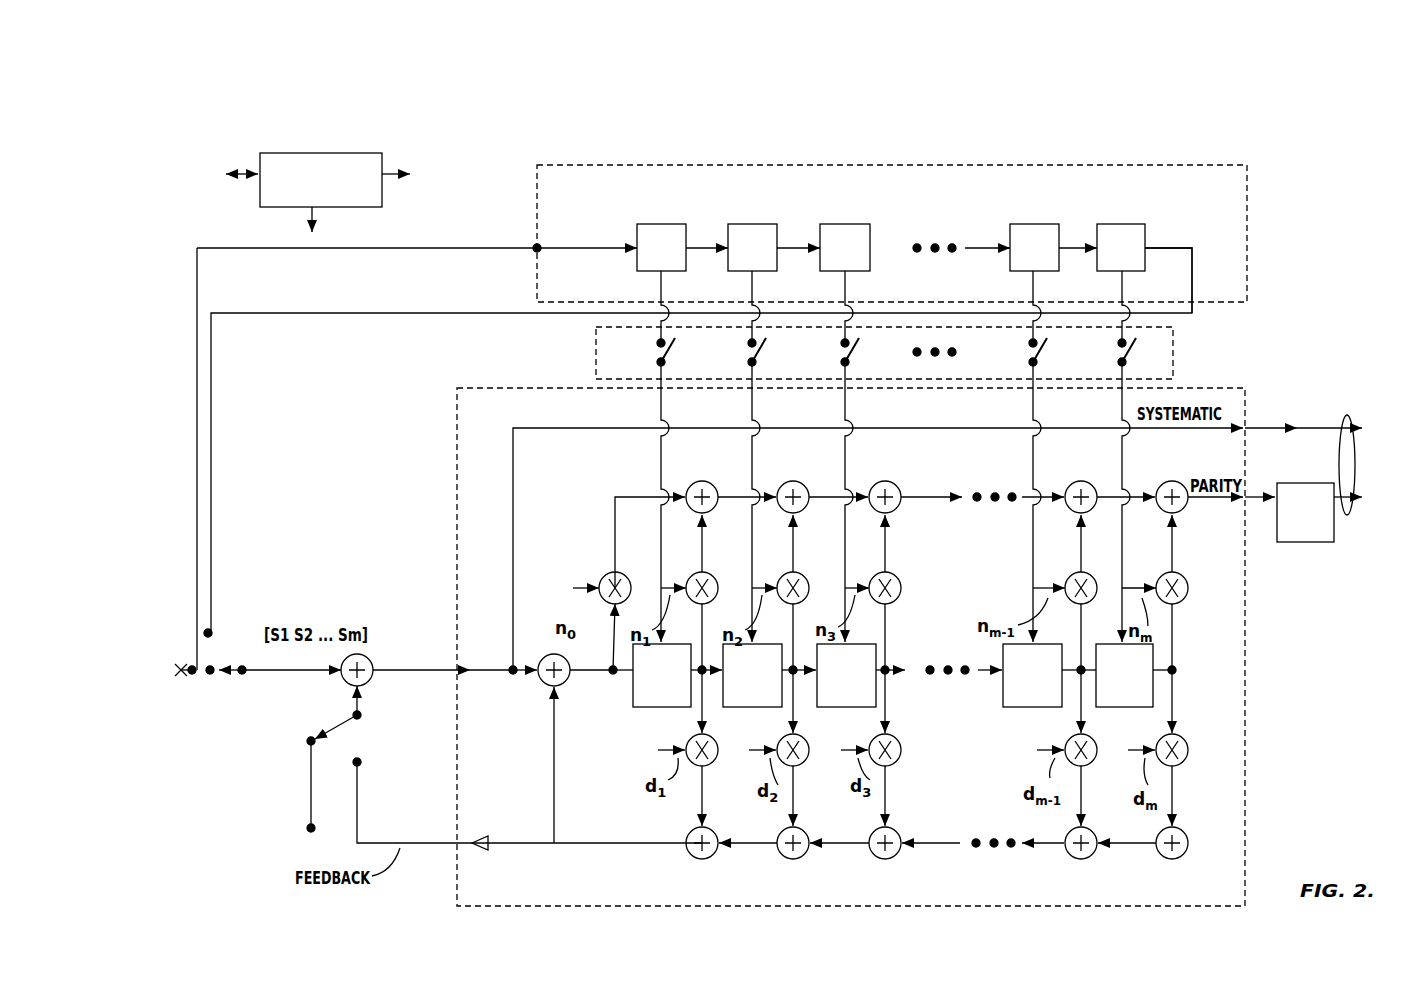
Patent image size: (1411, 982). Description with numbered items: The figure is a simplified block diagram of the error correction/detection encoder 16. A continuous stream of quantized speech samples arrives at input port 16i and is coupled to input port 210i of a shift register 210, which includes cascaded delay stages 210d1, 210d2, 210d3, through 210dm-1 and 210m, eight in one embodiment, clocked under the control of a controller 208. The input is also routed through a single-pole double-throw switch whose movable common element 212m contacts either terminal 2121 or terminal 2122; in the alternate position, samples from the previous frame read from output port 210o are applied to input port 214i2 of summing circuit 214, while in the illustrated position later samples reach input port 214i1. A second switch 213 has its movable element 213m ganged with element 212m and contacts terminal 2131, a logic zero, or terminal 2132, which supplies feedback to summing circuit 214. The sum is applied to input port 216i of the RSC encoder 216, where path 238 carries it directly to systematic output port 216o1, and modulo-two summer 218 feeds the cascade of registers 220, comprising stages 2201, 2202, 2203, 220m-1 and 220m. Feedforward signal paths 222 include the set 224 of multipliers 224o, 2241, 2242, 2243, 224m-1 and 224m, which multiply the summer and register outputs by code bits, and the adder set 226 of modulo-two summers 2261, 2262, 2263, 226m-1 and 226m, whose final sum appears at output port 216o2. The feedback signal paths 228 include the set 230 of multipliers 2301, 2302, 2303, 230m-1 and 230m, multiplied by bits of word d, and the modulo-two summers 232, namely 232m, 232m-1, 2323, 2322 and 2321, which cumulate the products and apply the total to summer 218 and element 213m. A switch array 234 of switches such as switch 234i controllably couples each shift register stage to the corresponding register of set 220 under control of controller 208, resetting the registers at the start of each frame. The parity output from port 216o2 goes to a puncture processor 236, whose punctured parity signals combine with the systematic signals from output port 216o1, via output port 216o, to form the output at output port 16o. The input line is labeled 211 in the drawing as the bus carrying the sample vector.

The controller 208 is at (378, 150).
The error correction/detection encoder 16 is at (514, 135).
The shift register 210 is at (655, 165).
The input port of shift register 210i is at (537, 245).
The shift register stage 210d1 is at (675, 224).
The shift register stage 210d2 is at (755, 224).
The shift register stage 210d3 is at (848, 224).
The shift register stage 210dm-1 is at (1015, 224).
The delay stage 210m is at (1128, 224).
The output port of shift register 210o is at (1193, 311).
The switch array 234 is at (596, 330).
The switch of switch array 234i is at (657, 346).
The RSC encoder 216 is at (851, 647).
The input port of RSC encoder 216i is at (472, 667).
The output port of RSC encoder 216o is at (466, 848).
The systematic output port 216o1 is at (1248, 426).
The parity output port 216o2 is at (1248, 495).
The input port 16i is at (193, 674).
The output port 16o is at (1342, 416).
The switch terminal 2121 is at (192, 668).
The switch terminal 2122 is at (209, 630).
The movable common element 212m is at (222, 668).
The input bus 211 is at (226, 690).
The summing circuit 214 is at (372, 663).
The input port of summing circuit 214i1 is at (340, 678).
The input port of summing circuit 214i2 is at (352, 690).
The second switch 213 is at (362, 772).
The movable element 213m is at (336, 728).
The switch terminal 2131 is at (308, 745).
The switch terminal 2132 is at (362, 762).
The modulo-two summer 218 is at (547, 688).
The feedback signal paths 228 is at (538, 782).
The cascade of registers 220 is at (618, 714).
The register 2201 is at (666, 708).
The register 2202 is at (760, 708).
The register 2203 is at (855, 708).
The register 220m-1 is at (1040, 708).
The register 220m is at (1143, 708).
The feedforward signal paths 222 is at (602, 508).
The set of multipliers 224 is at (597, 572).
The multiplier 224o is at (624, 575).
The multiplier 2241 is at (727, 568).
The multiplier 2242 is at (820, 568).
The multiplier 2243 is at (901, 580).
The multiplier 224m-1 is at (1070, 580).
The multiplier 224m is at (1205, 567).
The adder set 226 is at (776, 478).
The modulo-two summer 2261 is at (712, 510).
The modulo-two summer 2262 is at (803, 510).
The modulo-two summer 2263 is at (898, 510).
The modulo-two summer 226m-1 is at (1066, 505).
The modulo-two summer 226m is at (1168, 482).
The set of multipliers 230 is at (624, 780).
The multiplier 2301 is at (718, 762).
The multiplier 2302 is at (809, 762).
The multiplier 2303 is at (901, 762).
The multiplier 230m-1 is at (1097, 762).
The multiplier 230m is at (1188, 755).
The modulo-two summers 232 is at (608, 860).
The modulo-two summer 2321 is at (700, 860).
The modulo-two summer 2322 is at (790, 860).
The modulo-two summer 2323 is at (900, 860).
The modulo-two summer 232m-1 is at (1096, 860).
The modulo-two summer 232m is at (1192, 858).
The puncture processor 236 is at (1328, 545).
The path 238 is at (950, 430).